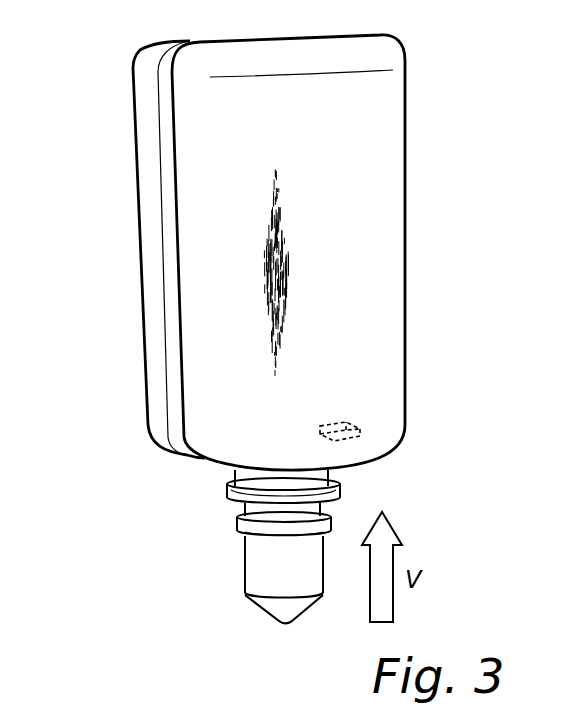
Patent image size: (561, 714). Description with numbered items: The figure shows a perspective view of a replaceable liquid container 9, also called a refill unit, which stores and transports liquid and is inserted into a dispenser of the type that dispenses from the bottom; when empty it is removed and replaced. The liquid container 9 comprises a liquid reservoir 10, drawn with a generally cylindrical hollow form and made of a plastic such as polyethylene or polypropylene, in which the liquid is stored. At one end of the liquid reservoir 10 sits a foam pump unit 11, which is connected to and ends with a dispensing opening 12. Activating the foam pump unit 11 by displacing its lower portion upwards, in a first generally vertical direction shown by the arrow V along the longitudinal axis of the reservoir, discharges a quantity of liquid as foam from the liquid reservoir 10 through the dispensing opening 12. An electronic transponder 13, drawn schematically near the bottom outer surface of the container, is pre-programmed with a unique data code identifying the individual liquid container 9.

The replaceable liquid container 9 is at (106, 84).
The liquid reservoir 10 is at (378, 192).
The foam pump unit 11 is at (181, 505).
The dispensing opening 12 is at (277, 608).
The electronic transponder 13 is at (350, 426).